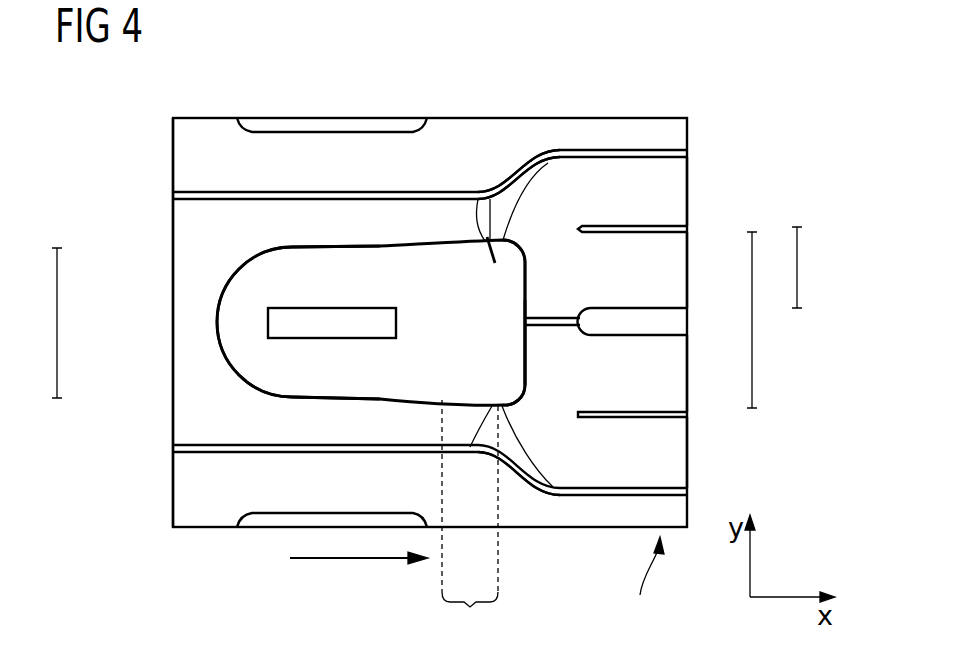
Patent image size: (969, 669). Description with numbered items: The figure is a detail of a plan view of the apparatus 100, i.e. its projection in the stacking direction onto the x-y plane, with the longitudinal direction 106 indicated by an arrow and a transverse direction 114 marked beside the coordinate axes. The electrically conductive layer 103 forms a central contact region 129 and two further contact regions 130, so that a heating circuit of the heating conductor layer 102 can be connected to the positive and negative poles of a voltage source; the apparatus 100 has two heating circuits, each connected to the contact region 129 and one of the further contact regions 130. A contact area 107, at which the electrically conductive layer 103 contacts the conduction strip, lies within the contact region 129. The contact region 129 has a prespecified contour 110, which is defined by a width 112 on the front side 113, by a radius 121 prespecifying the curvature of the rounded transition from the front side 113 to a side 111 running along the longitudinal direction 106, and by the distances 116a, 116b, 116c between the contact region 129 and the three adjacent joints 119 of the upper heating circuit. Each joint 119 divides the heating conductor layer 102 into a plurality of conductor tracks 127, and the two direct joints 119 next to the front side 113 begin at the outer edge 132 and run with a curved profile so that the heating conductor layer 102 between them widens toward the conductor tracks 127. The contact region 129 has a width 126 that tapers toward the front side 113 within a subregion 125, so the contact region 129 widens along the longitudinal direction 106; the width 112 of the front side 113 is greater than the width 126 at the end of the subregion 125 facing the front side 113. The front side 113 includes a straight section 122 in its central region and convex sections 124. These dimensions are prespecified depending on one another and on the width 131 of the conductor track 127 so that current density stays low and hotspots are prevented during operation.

The apparatus 100 is at (646, 93).
The heating conductor layer 102 is at (190, 430).
The electrically conductive layer 103 is at (396, 246).
The longitudinal direction 106 is at (340, 562).
The contact area 107 is at (267, 322).
The contour 110 is at (472, 444).
The side 111 is at (307, 246).
The width 112 is at (753, 348).
The front side 113 is at (526, 357).
The transverse direction 114 is at (642, 585).
The distance 116a is at (553, 318).
The distance 116b is at (527, 250).
The distance 116c is at (515, 190).
The joint 119 is at (603, 148).
The radius 121 is at (473, 193).
The straight section 122 is at (523, 293).
The convex section 124 is at (554, 150).
The subregion 125 is at (470, 520).
The width 126 is at (58, 337).
The conductor track 127 is at (665, 164).
The central contact region 129 is at (245, 280).
The further contact region 130 is at (286, 117).
The width of the conductor track 131 is at (798, 267).
The outer edge 132 is at (172, 385).